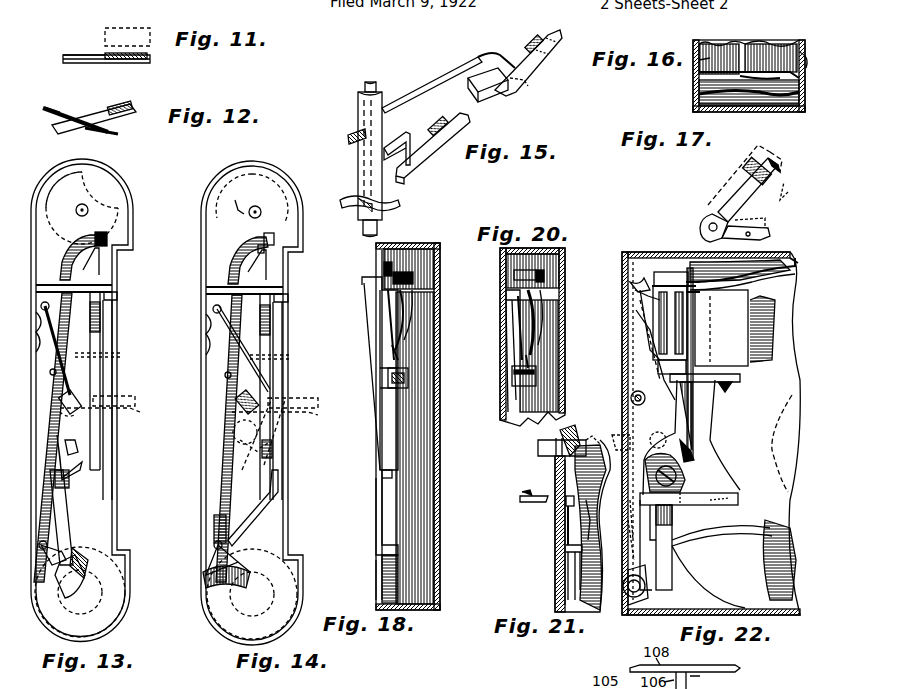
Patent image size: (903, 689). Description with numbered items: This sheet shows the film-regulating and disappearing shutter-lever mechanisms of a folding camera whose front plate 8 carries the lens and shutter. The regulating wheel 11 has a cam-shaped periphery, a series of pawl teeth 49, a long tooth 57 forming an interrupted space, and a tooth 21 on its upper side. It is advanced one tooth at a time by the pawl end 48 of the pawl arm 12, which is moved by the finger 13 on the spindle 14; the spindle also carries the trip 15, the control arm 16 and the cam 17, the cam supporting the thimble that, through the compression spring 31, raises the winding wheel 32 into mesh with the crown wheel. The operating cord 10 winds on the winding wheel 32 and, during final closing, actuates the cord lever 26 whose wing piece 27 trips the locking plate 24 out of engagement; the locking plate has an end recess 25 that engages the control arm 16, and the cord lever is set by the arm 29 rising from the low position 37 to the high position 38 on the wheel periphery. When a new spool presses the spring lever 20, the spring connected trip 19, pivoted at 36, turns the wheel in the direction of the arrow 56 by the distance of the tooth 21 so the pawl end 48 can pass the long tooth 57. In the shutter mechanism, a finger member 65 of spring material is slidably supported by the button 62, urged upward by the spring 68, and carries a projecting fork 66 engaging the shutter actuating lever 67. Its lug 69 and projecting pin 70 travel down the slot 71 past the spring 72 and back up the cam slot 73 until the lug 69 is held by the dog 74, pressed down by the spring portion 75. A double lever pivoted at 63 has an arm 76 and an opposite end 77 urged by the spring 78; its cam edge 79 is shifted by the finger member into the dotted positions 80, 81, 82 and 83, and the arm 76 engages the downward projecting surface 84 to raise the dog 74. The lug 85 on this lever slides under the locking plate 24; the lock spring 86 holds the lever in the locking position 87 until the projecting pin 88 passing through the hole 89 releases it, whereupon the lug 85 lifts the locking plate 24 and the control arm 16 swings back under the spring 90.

In FIG. 18, the front plate 8 is at (404, 250).
In FIG. 20, the front plate 8 is at (572, 350).
In FIG. 22, the front plate 8 is at (622, 262).
In FIG. 13, the operating cord 10 is at (109, 419).
In FIG. 14, the operating cord 10 is at (282, 423).
In FIG. 13, the regulating wheel 11 is at (108, 200).
In FIG. 14, the regulating wheel 11 is at (270, 188).
In FIG. 16, the regulating wheel 11 is at (693, 70).
In FIG. 17, the regulating wheel 11 is at (794, 192).
In FIG. 13, the pawl arm 12 is at (62, 323).
In FIG. 14, the pawl arm 12 is at (222, 388).
In FIG. 15, the pawl arm 12 is at (432, 140).
In FIG. 16, the pawl arm 12 is at (699, 112).
In FIG. 13, the finger 13 is at (38, 541).
In FIG. 14, the finger 13 is at (214, 526).
In FIG. 15, the finger 13 is at (400, 140).
In FIG. 15, the spindle 14 is at (358, 110).
In FIG. 15, the trip 15 is at (348, 137).
In FIG. 11, the control arm 16 is at (82, 63).
In FIG. 13, the control arm 16 is at (60, 472).
In FIG. 14, the control arm 16 is at (262, 493).
In FIG. 15, the control arm 16 is at (438, 80).
In FIG. 13, the cam 17 is at (62, 548).
In FIG. 14, the cam 17 is at (235, 558).
In FIG. 15, the cam 17 is at (362, 214).
In FIG. 17, the spring connected trip 19 is at (750, 184).
In FIG. 17, the spring lever 20 is at (760, 235).
In FIG. 16, the tooth 21 is at (762, 44).
In FIG. 17, the tooth 21 is at (778, 170).
In FIG. 11, the locking plate 24 is at (105, 31).
In FIG. 13, the locking plate 24 is at (102, 335).
In FIG. 14, the locking plate 24 is at (272, 345).
In FIG. 15, the locking plate 24 is at (494, 92).
In FIG. 11, the end recess 25 is at (147, 35).
In FIG. 15, the end recess 25 is at (506, 90).
In FIG. 12, the cord lever 26 is at (98, 130).
In FIG. 13, the cord lever 26 is at (62, 355).
In FIG. 14, the cord lever 26 is at (235, 332).
In FIG. 12, the wing piece 27 is at (68, 118).
In FIG. 13, the wing piece 27 is at (82, 392).
In FIG. 14, the wing piece 27 is at (258, 392).
In FIG. 13, the arm 29 is at (92, 266).
In FIG. 14, the arm 29 is at (260, 268).
In FIG. 13, the compression spring 31 is at (57, 190).
In FIG. 13, the winding wheel 32 is at (112, 602).
In FIG. 14, the winding wheel 32 is at (284, 586).
In FIG. 17, the pivot 36 is at (708, 220).
In FIG. 14, the low position 37 is at (290, 203).
In FIG. 16, the low position 37 is at (690, 56).
In FIG. 13, the high position 38 is at (110, 183).
In FIG. 14, the high position 38 is at (216, 220).
In FIG. 16, the high position 38 is at (802, 50).
In FIG. 13, the pawl end 48 is at (98, 235).
In FIG. 14, the pawl end 48 is at (266, 217).
In FIG. 16, the pawl end 48 is at (760, 108).
In FIG. 16, the series of pawl teeth 49 is at (699, 96).
In FIG. 14, the arrow 56 is at (246, 205).
In FIG. 16, the long tooth 57 is at (699, 78).
In FIG. 18, the button 62 is at (382, 476).
In FIG. 22, the button 62 is at (676, 470).
In FIG. 22, the pivot 63 is at (628, 398).
In FIG. 18, the finger member 65 is at (362, 287).
In FIG. 20, the finger member 65 is at (506, 298).
In FIG. 22, the finger member 65 is at (672, 530).
In FIG. 18, the projecting fork 66 is at (380, 372).
In FIG. 20, the projecting fork 66 is at (512, 372).
In FIG. 22, the projecting fork 66 is at (699, 371).
In FIG. 18, the actuating lever 67 is at (408, 375).
In FIG. 22, the actuating lever 67 is at (728, 388).
In FIG. 18, the spring 68 is at (382, 565).
In FIG. 22, the spring 68 is at (708, 536).
In FIG. 18, the lug 69 is at (384, 258).
In FIG. 20, the lug 69 is at (544, 276).
In FIG. 22, the lug 69 is at (670, 323).
In FIG. 22, the projecting pin 70 is at (692, 268).
In FIG. 18, the slot 71 is at (388, 305).
In FIG. 20, the slot 71 is at (518, 312).
In FIG. 18, the spring 72 is at (396, 344).
In FIG. 20, the spring 72 is at (519, 344).
In FIG. 18, the cam slot 73 is at (406, 322).
In FIG. 20, the cam slot 73 is at (543, 322).
In FIG. 22, the cam slot 73 is at (735, 328).
In FIG. 18, the dog 74 is at (410, 275).
In FIG. 20, the dog 74 is at (514, 270).
In FIG. 22, the dog 74 is at (660, 272).
In FIG. 22, the spring portion 75 is at (738, 278).
In FIG. 22, the arm 76 is at (634, 318).
In FIG. 21, the arm end 77 is at (568, 550).
In FIG. 21, the spring 78 is at (568, 568).
In FIG. 22, the spring 78 is at (623, 584).
In FIG. 22, the cam edge 79 is at (690, 436).
In FIG. 22, the dotted line position 80 is at (658, 440).
In FIG. 22, the dotted position 81 is at (640, 300).
In FIG. 21, the dotted position 82 is at (604, 520).
In FIG. 21, the dotted position 83 is at (596, 432).
In FIG. 22, the downward projecting surface 84 is at (640, 280).
In FIG. 13, the lug 85 is at (122, 398).
In FIG. 14, the lug 85 is at (296, 400).
In FIG. 21, the lug 85 is at (538, 446).
In FIG. 22, the lug 85 is at (613, 437).
In FIG. 22, the lock spring 86 is at (692, 498).
In FIG. 21, the locking position 87 is at (566, 520).
In FIG. 13, the projecting pin 88 is at (122, 356).
In FIG. 14, the projecting pin 88 is at (292, 358).
In FIG. 21, the projecting pin 88 is at (530, 490).
In FIG. 21, the hole 89 is at (566, 500).
In FIG. 22, the hole 89 is at (618, 522).
In FIG. 13, the spring 90 is at (40, 355).
In FIG. 14, the spring 90 is at (212, 356).